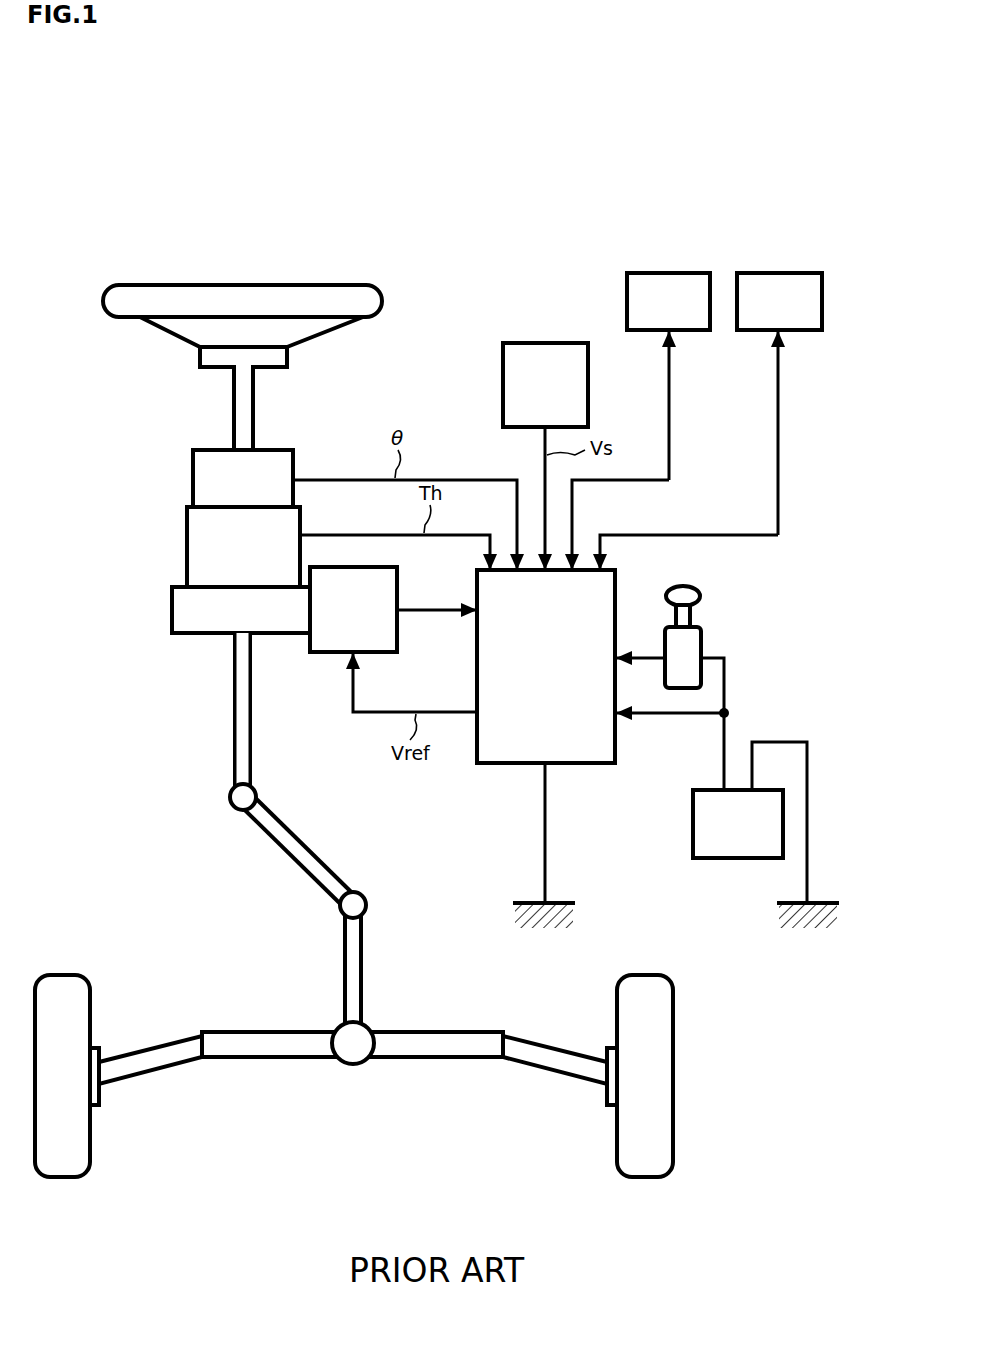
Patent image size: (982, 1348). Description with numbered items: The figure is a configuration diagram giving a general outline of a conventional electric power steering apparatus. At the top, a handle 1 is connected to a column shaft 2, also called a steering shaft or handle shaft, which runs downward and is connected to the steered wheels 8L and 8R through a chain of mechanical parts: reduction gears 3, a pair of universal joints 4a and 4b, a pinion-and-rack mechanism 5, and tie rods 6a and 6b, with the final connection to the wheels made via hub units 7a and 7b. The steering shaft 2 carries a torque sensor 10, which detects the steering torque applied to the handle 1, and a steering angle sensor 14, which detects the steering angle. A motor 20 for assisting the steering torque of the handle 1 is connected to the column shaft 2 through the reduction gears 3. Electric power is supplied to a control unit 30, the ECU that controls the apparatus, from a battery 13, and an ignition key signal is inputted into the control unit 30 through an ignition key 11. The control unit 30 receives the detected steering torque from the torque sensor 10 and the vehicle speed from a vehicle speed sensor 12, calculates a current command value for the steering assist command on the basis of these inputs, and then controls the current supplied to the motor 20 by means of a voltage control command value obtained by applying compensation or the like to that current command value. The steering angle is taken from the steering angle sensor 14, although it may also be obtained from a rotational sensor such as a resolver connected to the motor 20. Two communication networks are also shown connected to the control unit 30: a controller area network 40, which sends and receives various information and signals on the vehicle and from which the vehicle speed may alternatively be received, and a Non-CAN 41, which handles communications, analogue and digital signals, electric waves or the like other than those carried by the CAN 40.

The handle 1 is at (382, 296).
The column shaft 2 is at (232, 412).
The reduction gears 3 is at (170, 615).
The universal joint 4a is at (228, 808).
The universal joint 4b is at (338, 914).
The pinion-and-rack mechanism 5 is at (370, 1023).
The tie rod 6a is at (130, 1052).
The tie rod 6b is at (545, 1052).
The hub unit 7a is at (100, 1102).
The hub unit 7b is at (606, 1102).
The steered wheel 8L is at (90, 1163).
The steered wheel 8R is at (617, 1163).
The torque sensor 10 is at (185, 536).
The ignition key 11 is at (700, 594).
The vehicle speed sensor 12 is at (590, 352).
The battery 13 is at (691, 817).
The steering angle sensor 14 is at (191, 472).
The motor 20 is at (397, 575).
The control unit 30 is at (617, 576).
The controller area network 40 is at (808, 272).
The Non-CAN 41 is at (698, 272).